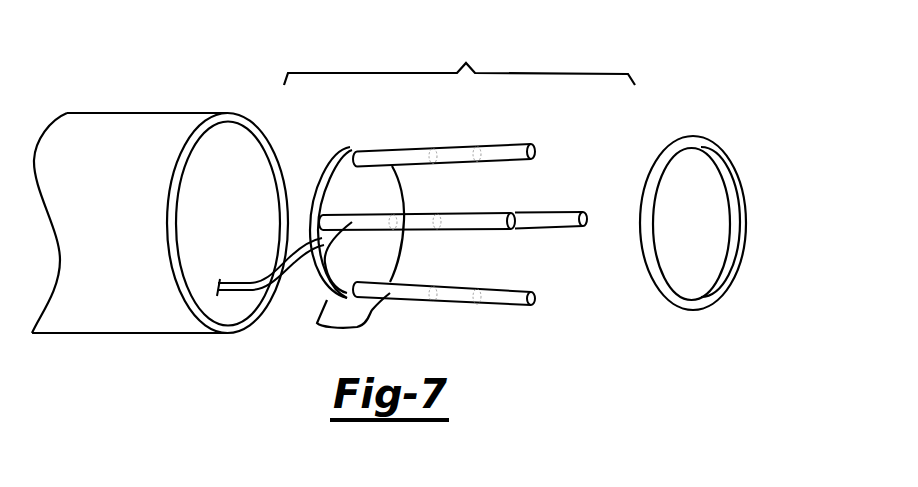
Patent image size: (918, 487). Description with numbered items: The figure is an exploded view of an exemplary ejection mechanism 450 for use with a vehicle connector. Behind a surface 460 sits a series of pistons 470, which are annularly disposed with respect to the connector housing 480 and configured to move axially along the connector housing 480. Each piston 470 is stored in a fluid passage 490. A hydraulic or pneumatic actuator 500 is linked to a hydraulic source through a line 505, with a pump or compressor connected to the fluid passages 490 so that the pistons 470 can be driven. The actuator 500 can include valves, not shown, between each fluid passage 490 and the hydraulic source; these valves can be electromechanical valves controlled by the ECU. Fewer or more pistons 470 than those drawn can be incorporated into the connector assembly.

The ejection mechanism 450 is at (459, 58).
The surface 460 is at (740, 227).
The pistons 470 is at (414, 230).
The connector housing 480 is at (100, 236).
The fluid passage 490 is at (317, 323).
The hydraulic or pneumatic actuator 500 is at (346, 186).
The line 505 is at (235, 283).